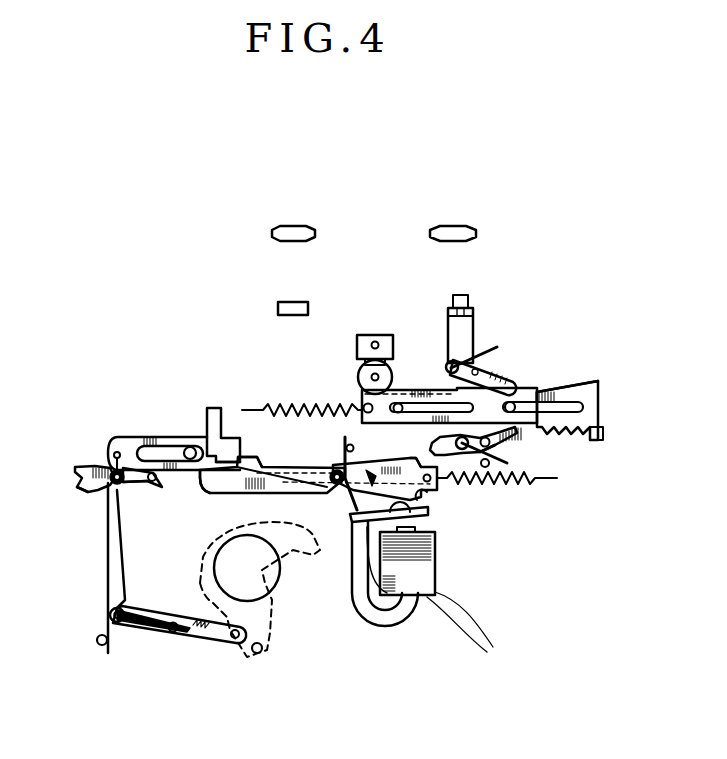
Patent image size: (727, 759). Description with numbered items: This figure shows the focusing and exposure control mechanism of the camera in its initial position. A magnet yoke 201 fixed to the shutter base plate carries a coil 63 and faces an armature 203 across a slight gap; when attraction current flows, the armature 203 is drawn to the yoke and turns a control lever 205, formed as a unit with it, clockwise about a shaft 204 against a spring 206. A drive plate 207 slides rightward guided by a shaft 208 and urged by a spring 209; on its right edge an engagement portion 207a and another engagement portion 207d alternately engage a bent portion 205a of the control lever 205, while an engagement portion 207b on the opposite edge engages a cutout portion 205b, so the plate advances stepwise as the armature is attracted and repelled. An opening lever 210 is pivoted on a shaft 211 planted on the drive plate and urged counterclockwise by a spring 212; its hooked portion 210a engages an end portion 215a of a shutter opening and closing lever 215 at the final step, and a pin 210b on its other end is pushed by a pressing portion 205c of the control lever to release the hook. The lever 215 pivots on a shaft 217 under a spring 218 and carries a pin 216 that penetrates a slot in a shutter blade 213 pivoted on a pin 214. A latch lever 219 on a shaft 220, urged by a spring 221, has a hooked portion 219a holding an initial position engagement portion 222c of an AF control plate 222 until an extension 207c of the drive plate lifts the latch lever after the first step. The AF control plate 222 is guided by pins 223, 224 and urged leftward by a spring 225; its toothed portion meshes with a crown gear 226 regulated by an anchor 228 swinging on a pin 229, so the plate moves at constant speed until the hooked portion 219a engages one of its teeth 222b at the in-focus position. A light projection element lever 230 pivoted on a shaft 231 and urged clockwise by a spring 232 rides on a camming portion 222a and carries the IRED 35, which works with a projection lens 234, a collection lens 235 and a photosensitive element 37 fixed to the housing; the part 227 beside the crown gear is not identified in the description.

The light projecting element IRED 35 is at (468, 296).
The photosensitive element 37 is at (283, 302).
The coil 63 is at (420, 582).
The magnet yoke 201 is at (375, 620).
The armature 203 is at (362, 592).
The shaft 204 is at (336, 486).
The control lever 205 is at (293, 467).
The bent portion 205a is at (440, 497).
The cutout portion 205b is at (250, 458).
The pressing portion 205c is at (213, 477).
The spring 206 is at (350, 497).
The drive plate 207 is at (212, 408).
The engagement portion 207a is at (427, 520).
The engagement portion 207b is at (228, 453).
The extension 207c is at (418, 457).
The engagement portion 207d is at (433, 520).
The shaft 208 is at (190, 447).
The spring 209 is at (520, 484).
The opening lever 210 is at (83, 470).
The hooked portion 210a is at (82, 487).
The pin 210b is at (150, 472).
The shaft 211 is at (115, 453).
The spring 212 is at (127, 482).
The shutter blade 213 is at (268, 617).
The pin 214 is at (258, 653).
The shutter opening and closing lever 215 is at (210, 640).
The end portion 215a is at (110, 503).
The pin 216 is at (233, 641).
The shaft 217 is at (123, 627).
The spring 218 is at (100, 636).
The latch lever 219 is at (530, 457).
The hooked portion 219a is at (517, 438).
The shaft 220 is at (460, 437).
The spring 221 is at (497, 455).
The AF control plate 222 is at (593, 390).
The camming portion 222a is at (583, 380).
The teeth 222b is at (603, 427).
The initial position engagement portion 222c is at (517, 427).
The pin 223 is at (513, 405).
The pin 224 is at (402, 390).
The spring 225 is at (290, 403).
The crown gear 226 is at (357, 360).
The pulley 227 is at (358, 381).
The anchor 228 is at (360, 337).
The pin 229 is at (373, 335).
The light projection element lever 230 is at (490, 364).
The shaft 231 is at (450, 362).
The spring 232 is at (482, 345).
The projection lens 234 is at (470, 224).
The collection lens 235 is at (282, 225).